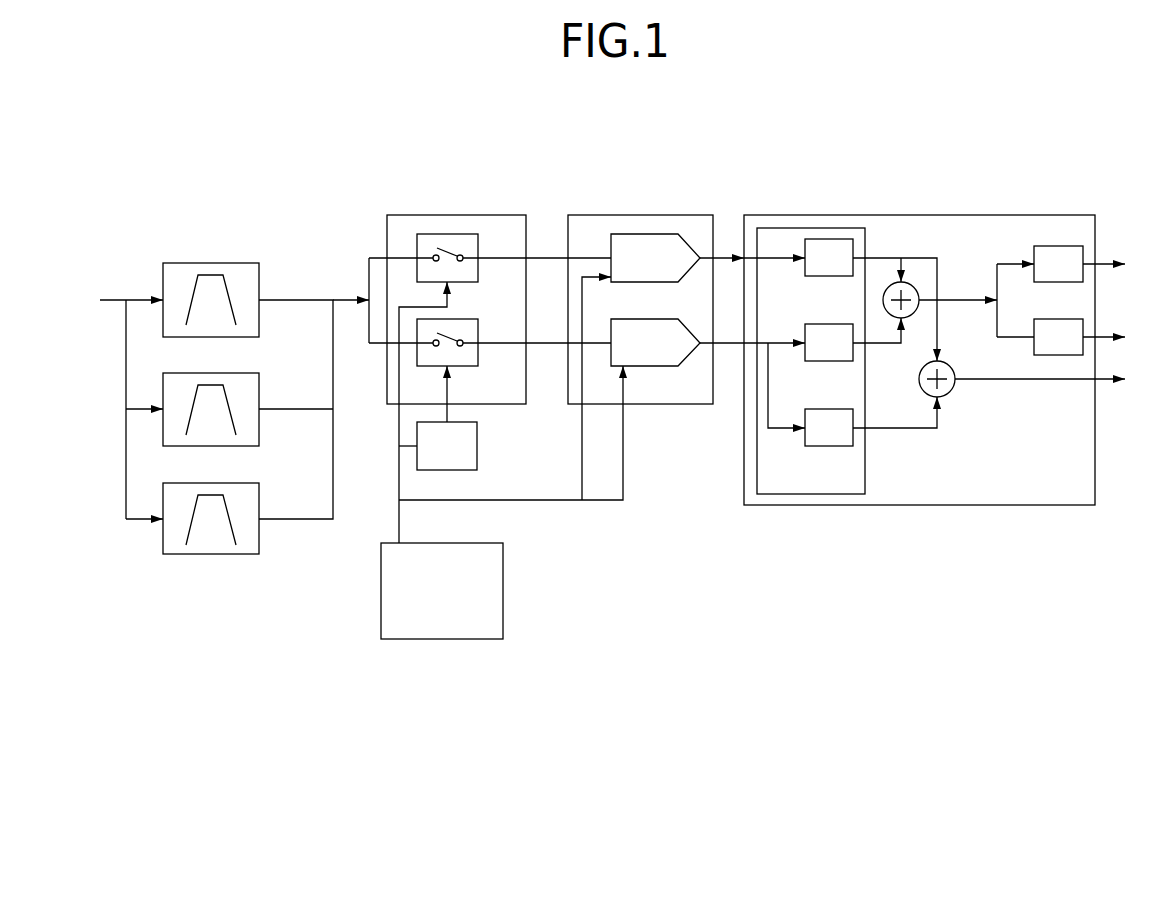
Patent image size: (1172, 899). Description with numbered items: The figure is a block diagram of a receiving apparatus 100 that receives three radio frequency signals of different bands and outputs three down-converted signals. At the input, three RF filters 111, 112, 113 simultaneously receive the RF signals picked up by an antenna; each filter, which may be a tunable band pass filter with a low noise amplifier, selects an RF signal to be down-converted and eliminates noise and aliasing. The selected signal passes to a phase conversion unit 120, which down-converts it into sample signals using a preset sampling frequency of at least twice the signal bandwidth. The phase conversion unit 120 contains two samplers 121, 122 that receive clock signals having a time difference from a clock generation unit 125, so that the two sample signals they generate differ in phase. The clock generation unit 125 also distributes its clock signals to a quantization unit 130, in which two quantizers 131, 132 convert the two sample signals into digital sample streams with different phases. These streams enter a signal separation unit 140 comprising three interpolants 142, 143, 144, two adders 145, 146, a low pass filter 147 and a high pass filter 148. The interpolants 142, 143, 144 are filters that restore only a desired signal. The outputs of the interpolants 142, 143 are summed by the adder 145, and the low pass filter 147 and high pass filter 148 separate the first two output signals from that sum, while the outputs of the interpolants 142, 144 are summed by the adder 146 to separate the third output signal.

The receiving apparatus 100 is at (346, 190).
The RF filter 111 is at (259, 277).
The RF filter 112 is at (259, 386).
The RF filter 113 is at (259, 496).
The phase conversion unit 120 is at (461, 215).
The sampler 121 is at (466, 284).
The sampler 122 is at (466, 369).
The clock generation unit 125 is at (461, 603).
The quantization unit 130 is at (631, 215).
The quantizer 131 is at (657, 283).
The quantizer 132 is at (657, 368).
The signal separation unit 140 is at (958, 215).
The interpolant 142 is at (829, 276).
The interpolant 143 is at (829, 361).
The interpolant 144 is at (829, 446).
The adder 145 is at (915, 292).
The adder 146 is at (950, 391).
The low pass filter 147 is at (1070, 247).
The high pass filter 148 is at (1070, 320).